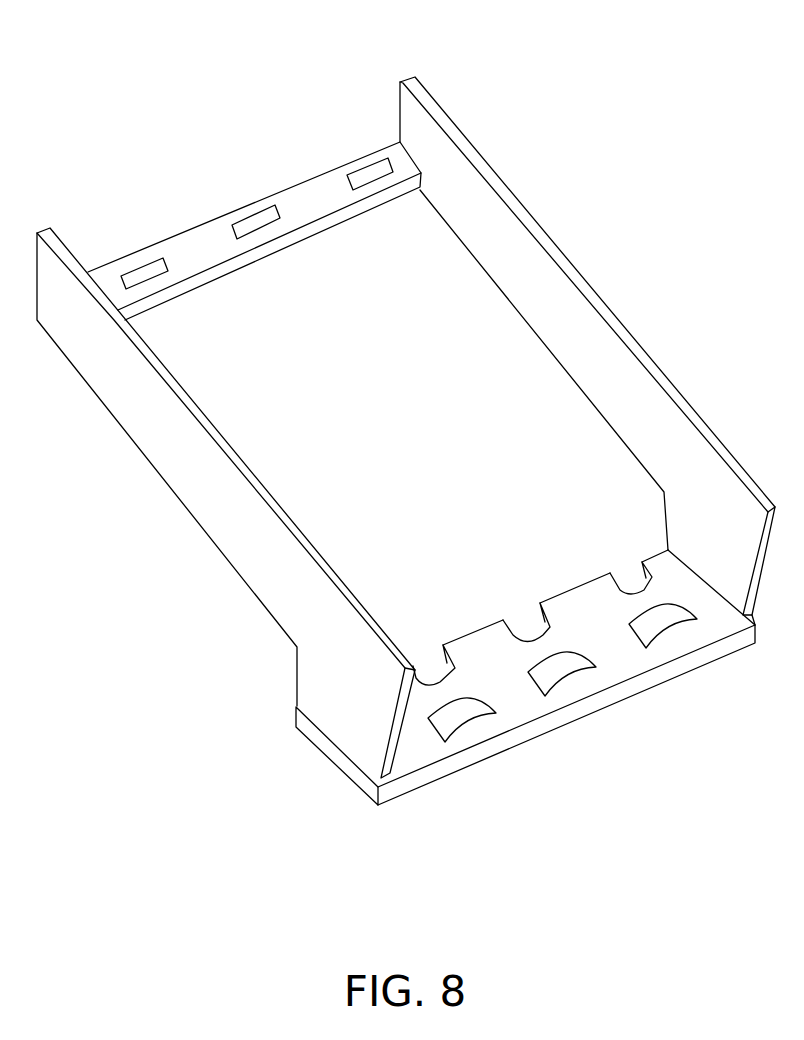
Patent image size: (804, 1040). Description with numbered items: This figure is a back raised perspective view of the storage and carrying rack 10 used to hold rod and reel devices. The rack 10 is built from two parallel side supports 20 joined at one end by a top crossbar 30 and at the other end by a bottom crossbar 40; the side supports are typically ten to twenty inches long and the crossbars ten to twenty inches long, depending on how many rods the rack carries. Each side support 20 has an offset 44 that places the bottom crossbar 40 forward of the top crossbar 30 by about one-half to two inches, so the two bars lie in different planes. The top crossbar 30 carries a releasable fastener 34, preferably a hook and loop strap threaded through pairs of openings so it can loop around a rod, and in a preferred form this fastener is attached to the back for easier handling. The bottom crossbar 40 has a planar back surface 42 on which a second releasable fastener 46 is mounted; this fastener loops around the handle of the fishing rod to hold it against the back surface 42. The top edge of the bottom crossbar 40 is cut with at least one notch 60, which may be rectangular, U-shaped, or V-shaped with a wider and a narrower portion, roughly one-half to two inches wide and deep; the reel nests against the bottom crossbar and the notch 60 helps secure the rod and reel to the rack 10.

The storage and carrying rack 10 is at (485, 70).
The side supports 20 is at (586, 273).
The top crossbar 30 is at (167, 242).
The releasable fastener 34 is at (257, 223).
The bottom crossbar 40 is at (428, 784).
The back surface 42 is at (723, 623).
The offsets 44 is at (318, 667).
The releasable fastener 46 is at (563, 672).
The notch 60 is at (627, 580).